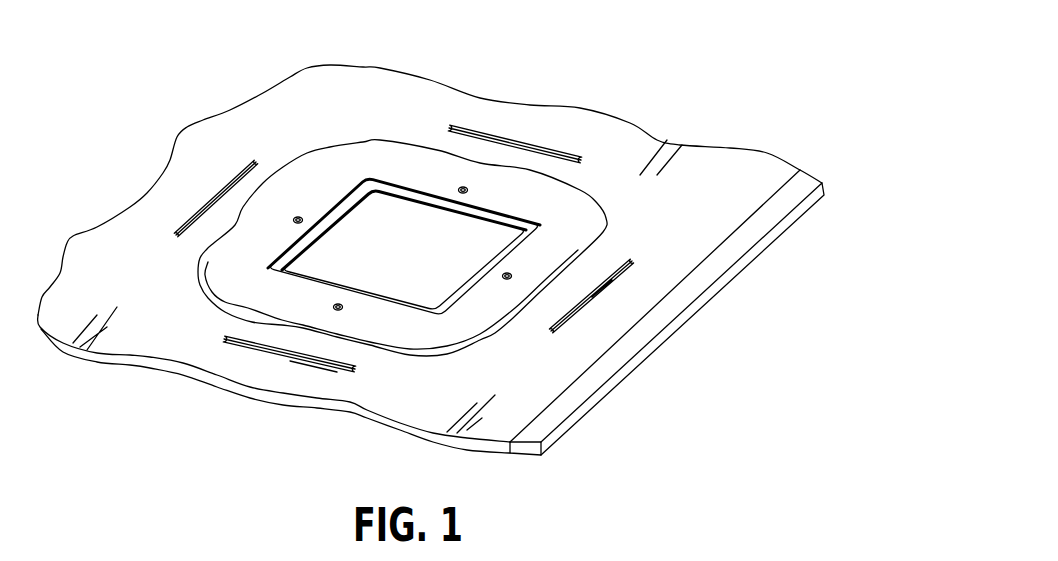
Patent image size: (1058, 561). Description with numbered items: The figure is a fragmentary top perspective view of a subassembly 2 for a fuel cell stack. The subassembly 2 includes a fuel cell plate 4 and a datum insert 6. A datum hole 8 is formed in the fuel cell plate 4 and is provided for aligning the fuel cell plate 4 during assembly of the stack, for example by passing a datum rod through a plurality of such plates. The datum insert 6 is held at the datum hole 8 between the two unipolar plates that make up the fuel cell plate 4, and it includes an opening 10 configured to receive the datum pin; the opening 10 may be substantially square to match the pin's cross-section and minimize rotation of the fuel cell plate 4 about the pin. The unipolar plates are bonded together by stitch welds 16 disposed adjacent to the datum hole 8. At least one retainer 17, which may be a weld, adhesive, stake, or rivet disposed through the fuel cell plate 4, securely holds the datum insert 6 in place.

The subassembly 2 is at (742, 45).
The fuel cell plate 4 is at (725, 168).
The datum insert 6 is at (335, 213).
The datum hole 8 is at (397, 192).
The opening 10 is at (404, 250).
The stitch weld 16 is at (583, 302).
The retainer 17 is at (470, 189).